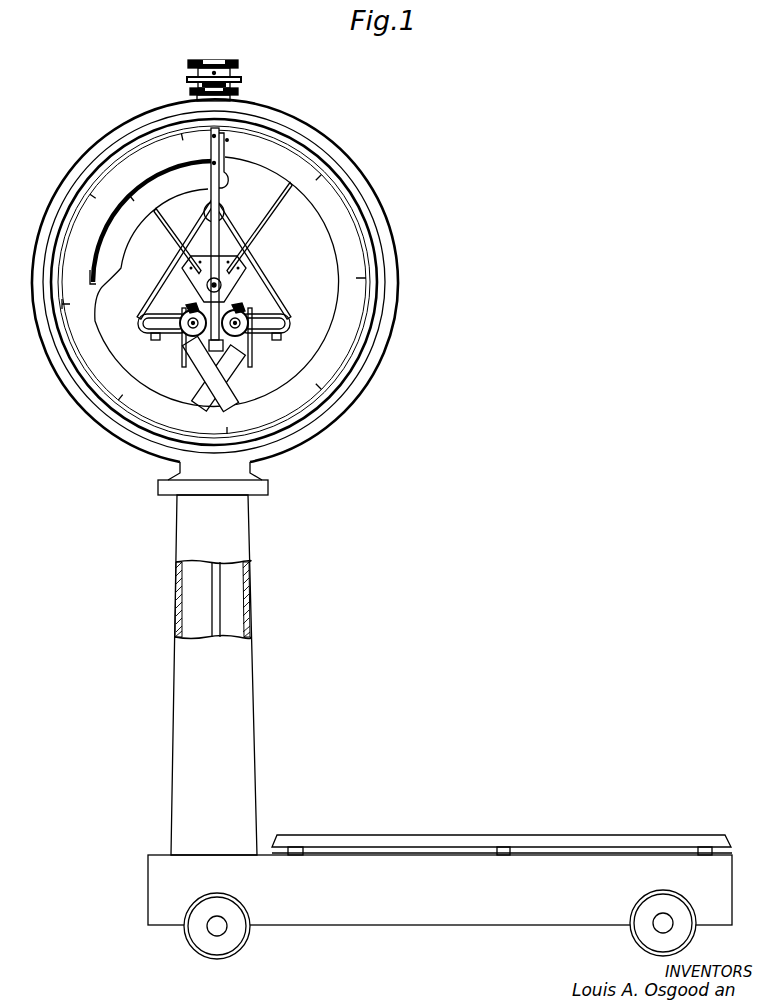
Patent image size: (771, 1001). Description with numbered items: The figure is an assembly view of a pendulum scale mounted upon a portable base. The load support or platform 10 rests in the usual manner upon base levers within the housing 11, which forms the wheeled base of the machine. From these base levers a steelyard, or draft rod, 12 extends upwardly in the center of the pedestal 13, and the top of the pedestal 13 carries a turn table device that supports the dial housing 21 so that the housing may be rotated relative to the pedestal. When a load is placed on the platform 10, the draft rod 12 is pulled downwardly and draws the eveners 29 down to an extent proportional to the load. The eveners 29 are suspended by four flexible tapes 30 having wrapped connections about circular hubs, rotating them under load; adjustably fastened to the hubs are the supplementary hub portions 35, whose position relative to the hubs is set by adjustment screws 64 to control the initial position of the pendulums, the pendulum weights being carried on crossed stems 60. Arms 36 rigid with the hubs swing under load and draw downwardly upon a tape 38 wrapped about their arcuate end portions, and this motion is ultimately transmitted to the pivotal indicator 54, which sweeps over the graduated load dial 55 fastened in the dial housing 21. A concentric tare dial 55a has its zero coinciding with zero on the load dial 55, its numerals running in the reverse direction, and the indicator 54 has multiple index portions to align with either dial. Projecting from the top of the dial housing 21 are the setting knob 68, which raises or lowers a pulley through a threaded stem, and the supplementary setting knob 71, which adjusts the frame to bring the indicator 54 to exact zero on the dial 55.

The load support or platform 10 is at (487, 841).
The housing 11 is at (448, 908).
The steelyard or draft rod 12 is at (221, 598).
The pedestal 13 is at (250, 678).
The dial housing 21 is at (377, 356).
The eveners 29 is at (237, 367).
The flexible tapes 30 is at (187, 310).
The supplementary hub portions 35 is at (180, 347).
The arms 36 is at (138, 323).
The tape 38 is at (167, 266).
The pivotal indicator 54 is at (224, 141).
The graduated load dial 55 is at (145, 153).
The tare dial 55a is at (128, 166).
The stems 60 is at (203, 373).
The adjustment screws 64 is at (190, 302).
The setting knob 68 is at (190, 62).
The supplementary setting knob 71 is at (190, 88).